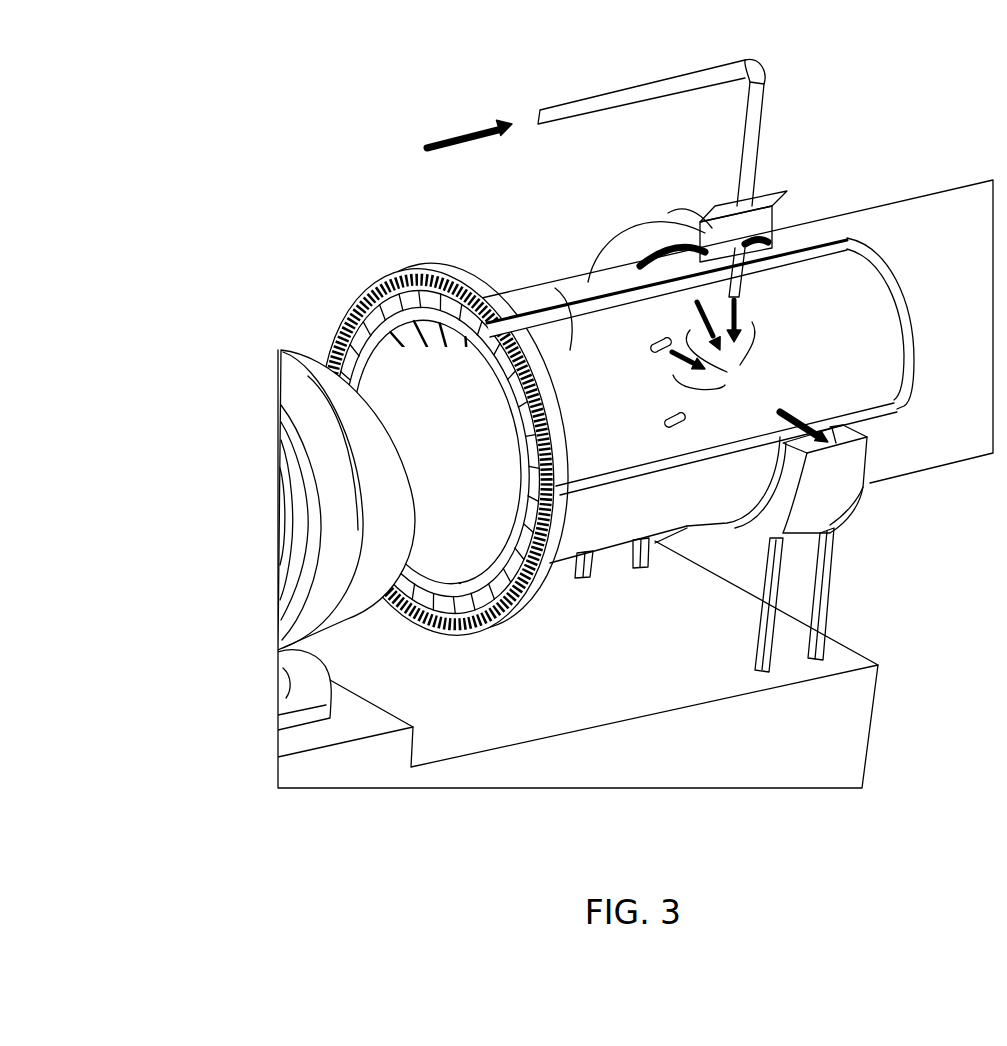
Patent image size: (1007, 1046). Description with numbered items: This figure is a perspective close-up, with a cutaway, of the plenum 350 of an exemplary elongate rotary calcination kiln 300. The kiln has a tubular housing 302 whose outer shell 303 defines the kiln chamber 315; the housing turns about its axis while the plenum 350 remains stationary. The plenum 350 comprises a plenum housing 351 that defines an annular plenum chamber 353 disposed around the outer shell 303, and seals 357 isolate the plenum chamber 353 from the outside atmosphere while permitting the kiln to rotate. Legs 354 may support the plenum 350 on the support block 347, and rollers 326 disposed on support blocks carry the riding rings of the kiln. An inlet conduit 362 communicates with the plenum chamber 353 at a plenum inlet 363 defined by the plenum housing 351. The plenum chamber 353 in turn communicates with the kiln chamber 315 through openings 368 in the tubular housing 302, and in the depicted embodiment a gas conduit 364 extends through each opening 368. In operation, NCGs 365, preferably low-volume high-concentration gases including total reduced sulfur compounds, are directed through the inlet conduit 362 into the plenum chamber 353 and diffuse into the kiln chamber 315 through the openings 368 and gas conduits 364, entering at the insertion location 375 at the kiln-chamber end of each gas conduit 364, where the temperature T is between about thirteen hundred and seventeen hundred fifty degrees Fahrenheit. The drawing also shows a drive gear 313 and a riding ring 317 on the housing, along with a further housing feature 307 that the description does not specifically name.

The elongate rotary calcination kiln 300 is at (225, 237).
The tubular housing 302 is at (893, 170).
The outer shell 303 is at (887, 227).
The housing wall 307 is at (800, 257).
The ring gear 313 is at (378, 265).
The kiln chamber 315 is at (557, 288).
The shaft hub 317 is at (323, 627).
The rollers 326 is at (292, 700).
The support block 347 is at (830, 718).
The plenum 350 is at (868, 545).
The plenum housing 351 is at (837, 483).
The plenum chamber 353 is at (776, 213).
The legs 354 is at (827, 630).
The seals 357 is at (667, 215).
The inlet conduit 362 is at (637, 97).
The plenum inlet 363 is at (713, 194).
The gas conduit 364 is at (660, 347).
The NCGs 365 is at (437, 141).
The openings 368 is at (750, 273).
The insertion location 375 is at (747, 363).